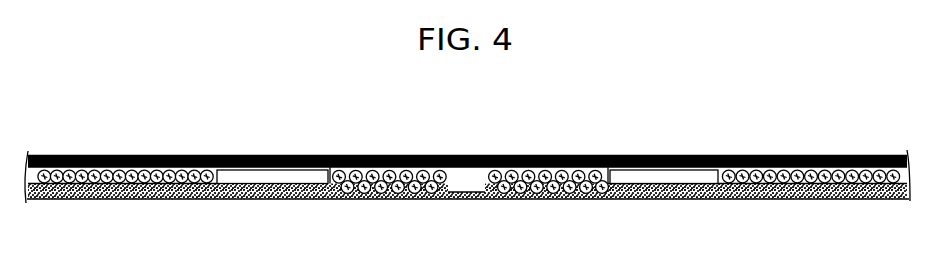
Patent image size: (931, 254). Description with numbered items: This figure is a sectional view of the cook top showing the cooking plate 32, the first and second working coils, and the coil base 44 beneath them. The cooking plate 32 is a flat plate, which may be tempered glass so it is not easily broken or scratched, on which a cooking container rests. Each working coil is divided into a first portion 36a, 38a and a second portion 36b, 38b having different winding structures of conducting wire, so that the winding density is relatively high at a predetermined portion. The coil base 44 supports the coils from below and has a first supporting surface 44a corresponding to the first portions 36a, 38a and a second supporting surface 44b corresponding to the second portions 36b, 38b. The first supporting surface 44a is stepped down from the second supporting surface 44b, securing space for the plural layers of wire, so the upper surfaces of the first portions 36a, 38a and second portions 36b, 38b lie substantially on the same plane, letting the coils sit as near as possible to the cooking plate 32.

The cooking plate 32 is at (253, 164).
The first portion of first working coil 36a is at (558, 172).
The second portion of first working coil 36b is at (750, 172).
The first portion of second working coil 38a is at (365, 172).
The second portion of second working coil 38b is at (135, 173).
The coil base 44 is at (258, 195).
The first supporting surface 44a is at (382, 195).
The second supporting surface 44b is at (155, 193).